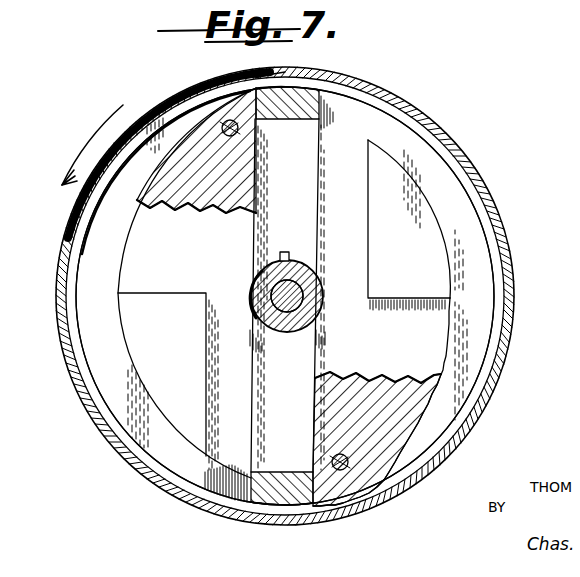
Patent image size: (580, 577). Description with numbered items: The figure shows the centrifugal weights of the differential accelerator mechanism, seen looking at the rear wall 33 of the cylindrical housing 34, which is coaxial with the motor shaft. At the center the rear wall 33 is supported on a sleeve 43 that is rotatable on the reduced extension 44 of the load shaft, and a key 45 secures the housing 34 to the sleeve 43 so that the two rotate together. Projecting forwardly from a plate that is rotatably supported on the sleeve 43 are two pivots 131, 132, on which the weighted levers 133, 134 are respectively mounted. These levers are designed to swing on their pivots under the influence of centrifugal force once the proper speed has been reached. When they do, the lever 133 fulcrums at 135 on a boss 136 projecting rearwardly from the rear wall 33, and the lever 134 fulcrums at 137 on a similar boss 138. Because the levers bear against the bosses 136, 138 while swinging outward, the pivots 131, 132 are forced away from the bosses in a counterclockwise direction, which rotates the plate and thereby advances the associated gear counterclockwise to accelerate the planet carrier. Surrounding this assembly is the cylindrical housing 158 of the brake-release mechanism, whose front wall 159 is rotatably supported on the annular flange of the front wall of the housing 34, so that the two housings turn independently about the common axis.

The rear wall 33 is at (105, 305).
The cylindrical housing 34 is at (480, 252).
The sleeve 43 is at (302, 330).
The reduced extension 44 is at (296, 290).
The key 45 is at (291, 236).
The pivot 131 is at (346, 466).
The pivot 132 is at (226, 125).
The weighted lever 133 is at (424, 355).
The weighted lever 134 is at (200, 273).
The fulcrum 135 is at (316, 498).
The boss 136 is at (278, 497).
The fulcrum 137 is at (270, 73).
The boss 138 is at (300, 88).
The cylindrical housing 158 is at (473, 178).
The front wall 159 is at (488, 212).